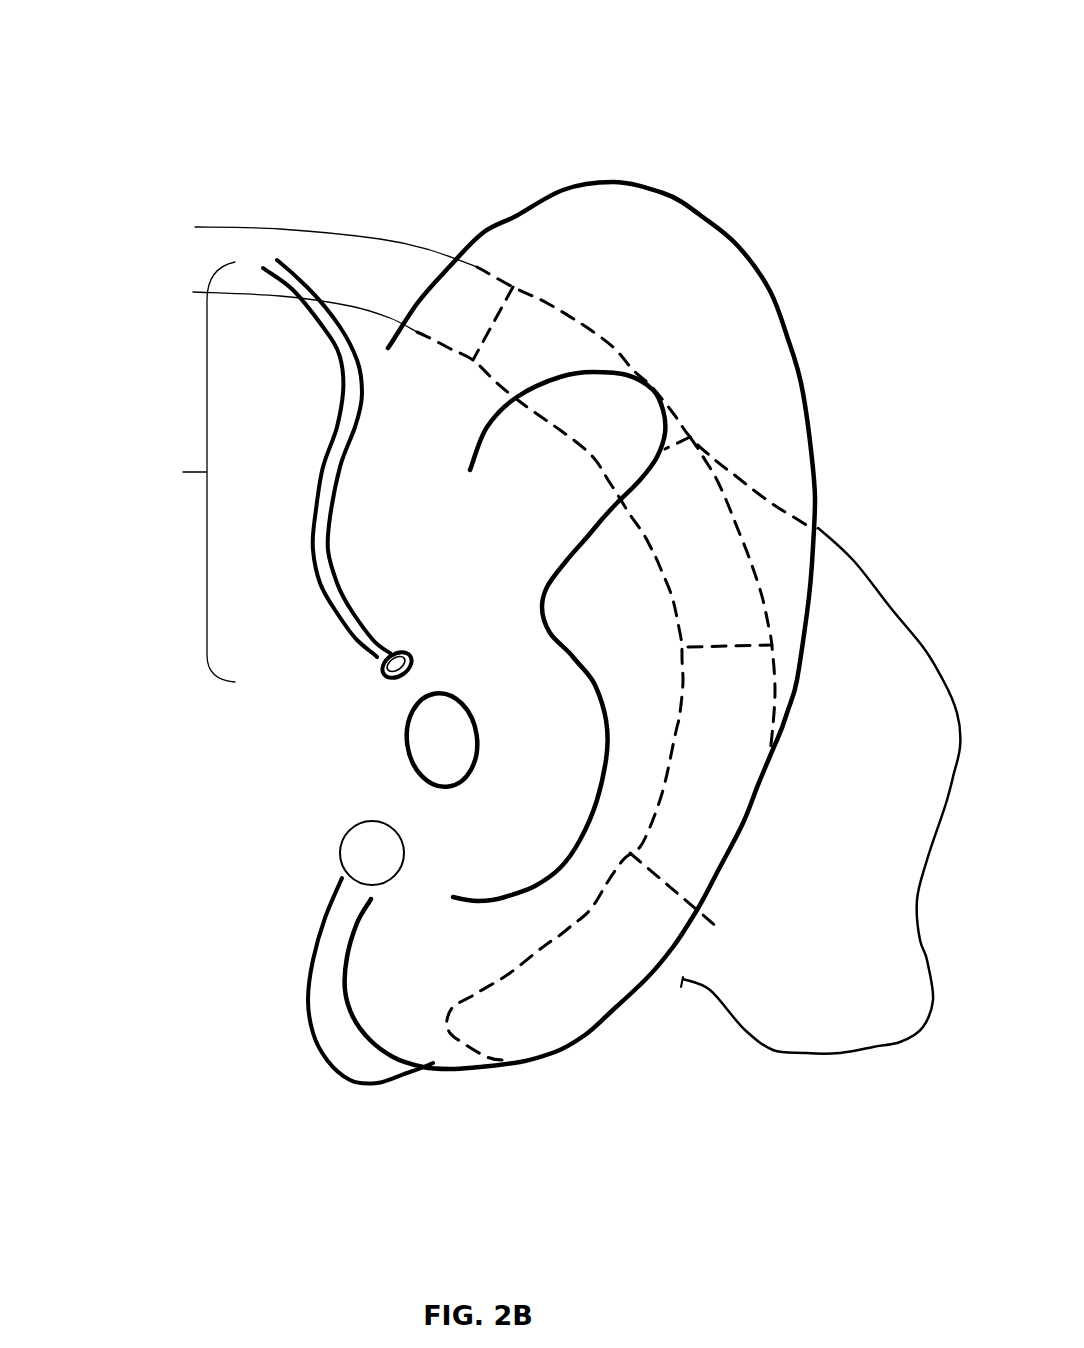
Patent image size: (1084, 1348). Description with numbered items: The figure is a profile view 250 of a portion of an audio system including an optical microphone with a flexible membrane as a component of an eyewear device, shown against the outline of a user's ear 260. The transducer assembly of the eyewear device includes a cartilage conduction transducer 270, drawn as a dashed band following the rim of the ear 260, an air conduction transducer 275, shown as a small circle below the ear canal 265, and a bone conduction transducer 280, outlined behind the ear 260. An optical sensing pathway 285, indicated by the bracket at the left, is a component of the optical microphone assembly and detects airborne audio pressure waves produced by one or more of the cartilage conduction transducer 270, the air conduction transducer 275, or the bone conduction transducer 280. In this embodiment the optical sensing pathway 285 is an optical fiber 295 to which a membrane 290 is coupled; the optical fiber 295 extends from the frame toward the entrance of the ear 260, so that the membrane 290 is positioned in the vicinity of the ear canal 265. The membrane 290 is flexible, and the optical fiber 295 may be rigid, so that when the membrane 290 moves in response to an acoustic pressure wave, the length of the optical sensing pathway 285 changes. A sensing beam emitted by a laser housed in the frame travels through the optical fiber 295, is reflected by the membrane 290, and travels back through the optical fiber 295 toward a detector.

The profile view 250 is at (124, 67).
The ear 260 is at (540, 193).
The ear canal 265 is at (443, 765).
The cartilage conduction transducer 270 is at (540, 1060).
The air conduction transducer 275 is at (340, 853).
The bone conduction transducer 280 is at (843, 1053).
The optical sensing pathway 285 is at (146, 472).
The membrane 290 is at (415, 656).
The optical fiber 295 is at (355, 340).